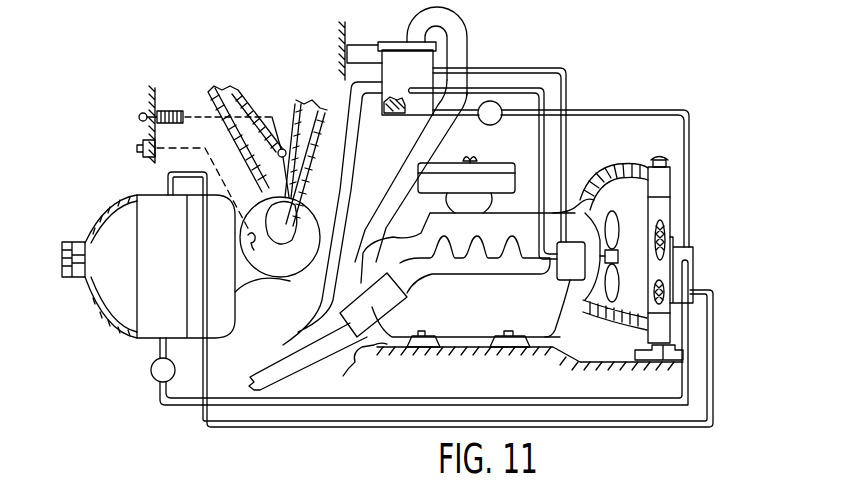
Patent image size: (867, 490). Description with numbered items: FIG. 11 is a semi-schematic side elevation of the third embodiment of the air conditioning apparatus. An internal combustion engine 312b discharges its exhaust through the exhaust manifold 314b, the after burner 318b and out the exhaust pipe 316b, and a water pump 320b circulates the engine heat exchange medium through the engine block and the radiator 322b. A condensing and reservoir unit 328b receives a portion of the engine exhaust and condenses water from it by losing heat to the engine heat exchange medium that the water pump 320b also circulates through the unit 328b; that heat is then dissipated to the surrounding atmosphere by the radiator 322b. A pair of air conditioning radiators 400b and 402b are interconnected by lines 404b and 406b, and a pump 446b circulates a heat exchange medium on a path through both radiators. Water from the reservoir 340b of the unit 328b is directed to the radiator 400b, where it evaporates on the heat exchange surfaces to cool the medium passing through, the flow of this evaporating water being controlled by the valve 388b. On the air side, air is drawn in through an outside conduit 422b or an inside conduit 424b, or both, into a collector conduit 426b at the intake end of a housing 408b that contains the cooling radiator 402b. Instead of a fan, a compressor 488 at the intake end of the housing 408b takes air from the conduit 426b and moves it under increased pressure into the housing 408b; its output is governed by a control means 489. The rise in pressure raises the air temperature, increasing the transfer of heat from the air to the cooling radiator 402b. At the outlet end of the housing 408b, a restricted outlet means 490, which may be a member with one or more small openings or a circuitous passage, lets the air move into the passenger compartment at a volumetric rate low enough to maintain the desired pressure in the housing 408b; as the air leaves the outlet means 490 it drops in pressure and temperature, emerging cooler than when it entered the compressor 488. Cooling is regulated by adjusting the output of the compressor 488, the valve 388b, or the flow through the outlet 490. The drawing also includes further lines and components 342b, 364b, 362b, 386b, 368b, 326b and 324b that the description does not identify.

The restricted outlet means 490 is at (77, 243).
The cooling radiator 402b is at (153, 210).
The inside conduit 424b is at (253, 77).
The outside conduit 422b is at (296, 104).
The fuel supply line 368b is at (353, 107).
The condensing and reservoir unit 328b is at (392, 63).
The air intake pipe 342b is at (460, 38).
The vapor line 364b is at (534, 69).
The fuel line 362b is at (543, 97).
The coolant line 386b is at (608, 110).
The reservoir 340b is at (393, 116).
The valve 388b is at (502, 124).
The upper radiator hose 326b is at (618, 180).
The fan 324b is at (624, 214).
The radiator 322b is at (668, 208).
The collector conduit 426b is at (278, 210).
The control means 489 is at (258, 251).
The compressor 488 is at (280, 278).
The internal combustion engine 312b is at (455, 318).
The exhaust manifold 314b is at (484, 268).
The water pump 320b is at (574, 280).
The air conditioning radiator 400b is at (689, 275).
The exhaust pipe 316b is at (272, 370).
The housing 408b is at (213, 330).
The after burner 318b is at (380, 344).
The pump 446b is at (155, 379).
The line 406b is at (283, 427).
The line 404b is at (365, 408).